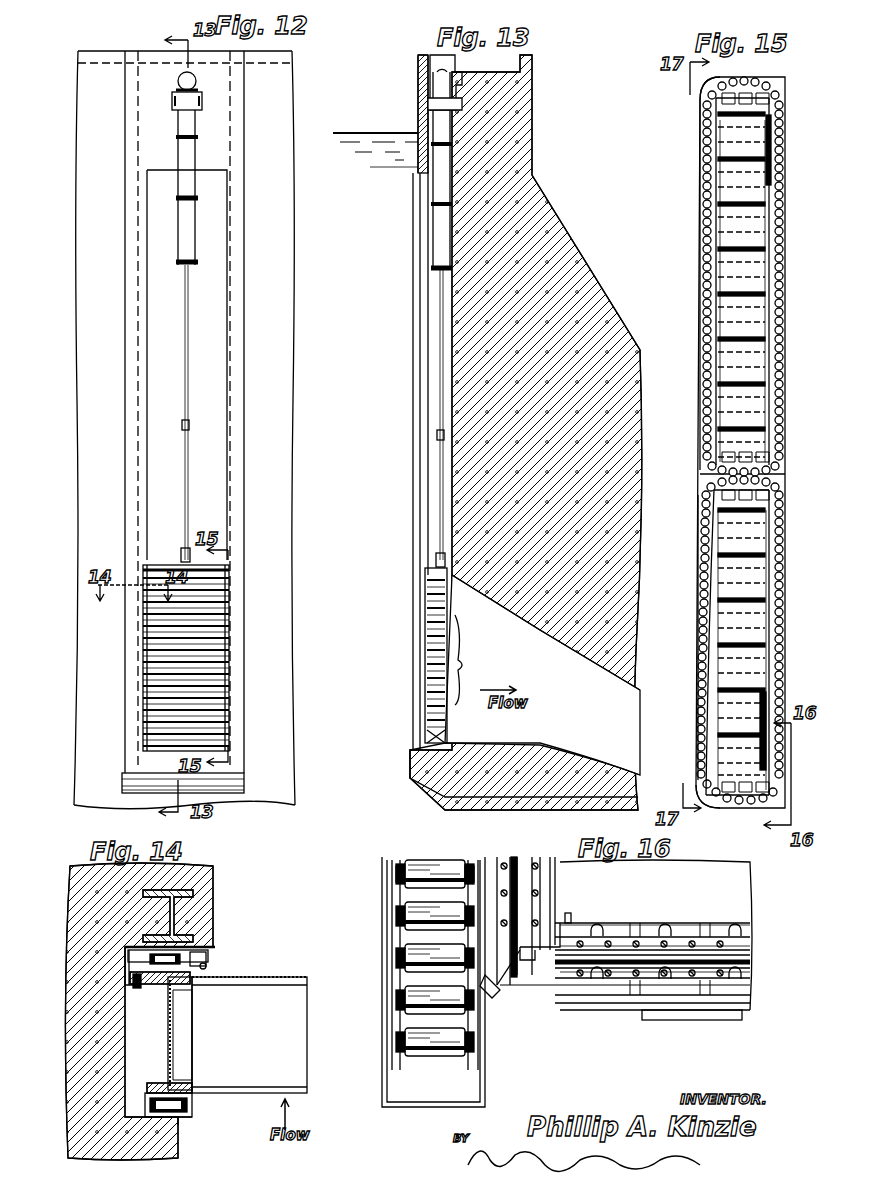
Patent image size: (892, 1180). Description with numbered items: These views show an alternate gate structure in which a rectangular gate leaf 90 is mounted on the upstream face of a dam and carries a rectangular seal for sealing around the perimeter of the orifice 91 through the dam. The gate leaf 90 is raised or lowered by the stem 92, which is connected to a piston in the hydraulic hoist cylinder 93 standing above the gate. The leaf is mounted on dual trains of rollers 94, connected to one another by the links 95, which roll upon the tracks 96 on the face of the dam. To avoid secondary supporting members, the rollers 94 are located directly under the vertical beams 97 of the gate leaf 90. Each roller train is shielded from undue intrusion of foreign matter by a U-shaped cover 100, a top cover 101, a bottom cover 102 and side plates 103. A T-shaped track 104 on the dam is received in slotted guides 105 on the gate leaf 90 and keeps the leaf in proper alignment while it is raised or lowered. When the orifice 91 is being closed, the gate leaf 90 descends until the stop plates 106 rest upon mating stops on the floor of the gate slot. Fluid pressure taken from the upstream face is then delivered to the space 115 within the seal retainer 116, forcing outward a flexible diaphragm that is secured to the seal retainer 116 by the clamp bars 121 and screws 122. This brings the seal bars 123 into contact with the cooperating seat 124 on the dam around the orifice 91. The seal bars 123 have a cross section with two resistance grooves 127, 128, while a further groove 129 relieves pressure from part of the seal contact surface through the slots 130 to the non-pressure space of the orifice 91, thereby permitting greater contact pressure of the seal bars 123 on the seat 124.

In FIG. 12, the gate leaf 90 is at (164, 566).
In FIG. 13, the gate leaf 90 is at (425, 653).
In FIG. 14, the gate leaf 90 is at (288, 1047).
In FIG. 16, the gate leaf 90 is at (725, 900).
In FIG. 13, the orifice 91 is at (462, 665).
In FIG. 14, the orifice 91 is at (215, 945).
In FIG. 12, the stem 92 is at (186, 487).
In FIG. 13, the stem 92 is at (437, 503).
In FIG. 12, the hydraulic hoist cylinder 93 is at (188, 241).
In FIG. 13, the hydraulic hoist cylinder 93 is at (438, 236).
In FIG. 15, the rollers 94 is at (703, 302).
In FIG. 14, the rollers 94 is at (185, 1120).
In FIG. 16, the rollers 94 is at (445, 862).
In FIG. 16, the links 95 is at (400, 858).
In FIG. 14, the tracks 96 is at (213, 900).
In FIG. 14, the vertical beams 97 is at (168, 1043).
In FIG. 15, the U-shaped cover 100 is at (701, 232).
In FIG. 14, the U-shaped cover 100 is at (195, 1112).
In FIG. 15, the top cover 101 is at (690, 79).
In FIG. 15, the bottom cover 102 is at (710, 810).
In FIG. 16, the bottom cover 102 is at (392, 1106).
In FIG. 15, the side plates 103 is at (780, 362).
In FIG. 14, the side plates 103 is at (125, 960).
In FIG. 16, the side plates 103 is at (386, 900).
In FIG. 14, the T-shaped track 104 is at (128, 990).
In FIG. 15, the slotted guides 105 is at (768, 142).
In FIG. 14, the slotted guides 105 is at (140, 990).
In FIG. 16, the stop plates 106 is at (668, 1020).
In FIG. 14, the space 115 is at (210, 968).
In FIG. 14, the seal retainer 116 is at (207, 963).
In FIG. 16, the seal retainer 116 is at (572, 922).
In FIG. 16, the clamp bars 121 is at (648, 975).
In FIG. 16, the screws 122 is at (722, 975).
In FIG. 16, the seal bars 123 is at (624, 955).
In FIG. 14, the seat 124 is at (210, 956).
In FIG. 16, the resistance groove 127 is at (510, 858).
In FIG. 16, the resistance groove 128 is at (518, 858).
In FIG. 16, the relief groove 129 is at (525, 858).
In FIG. 16, the slots 130 is at (510, 992).